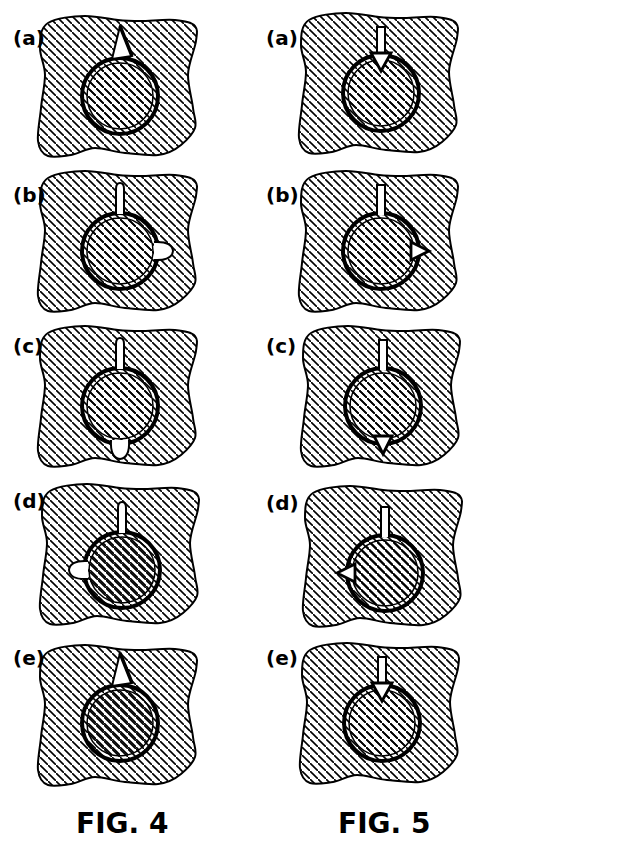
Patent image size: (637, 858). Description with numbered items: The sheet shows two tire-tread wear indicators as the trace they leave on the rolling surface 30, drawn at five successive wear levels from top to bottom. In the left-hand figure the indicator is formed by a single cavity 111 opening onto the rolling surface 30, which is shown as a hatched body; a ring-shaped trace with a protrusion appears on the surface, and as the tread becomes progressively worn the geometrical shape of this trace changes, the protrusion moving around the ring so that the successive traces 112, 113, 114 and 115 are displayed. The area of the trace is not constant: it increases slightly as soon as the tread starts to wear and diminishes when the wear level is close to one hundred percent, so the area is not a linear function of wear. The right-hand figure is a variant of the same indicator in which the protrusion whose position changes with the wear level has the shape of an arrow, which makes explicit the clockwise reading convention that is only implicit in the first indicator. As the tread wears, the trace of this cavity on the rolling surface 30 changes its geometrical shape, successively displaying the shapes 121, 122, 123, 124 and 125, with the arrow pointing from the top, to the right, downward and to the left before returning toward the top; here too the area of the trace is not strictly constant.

In FIG. 4, the rolling surface 30 is at (44, 35).
In FIG. 5, the rolling surface 30 is at (409, 398).
In FIG. 4, the cavity 111 is at (166, 80).
In FIG. 4, the marker cross-section (second form) 112 is at (166, 236).
In FIG. 4, the marker cross-section (third form) 113 is at (166, 398).
In FIG. 4, the marker cross-section (fourth form) 114 is at (160, 555).
In FIG. 4, the marker cross-section (fifth form) 115 is at (166, 707).
In FIG. 5, the trace shape 121 is at (431, 79).
In FIG. 5, the trace shape 122 is at (431, 237).
In FIG. 5, the trace shape 123 is at (432, 397).
In FIG. 5, the trace shape 124 is at (428, 559).
In FIG. 5, the trace shape 125 is at (431, 709).